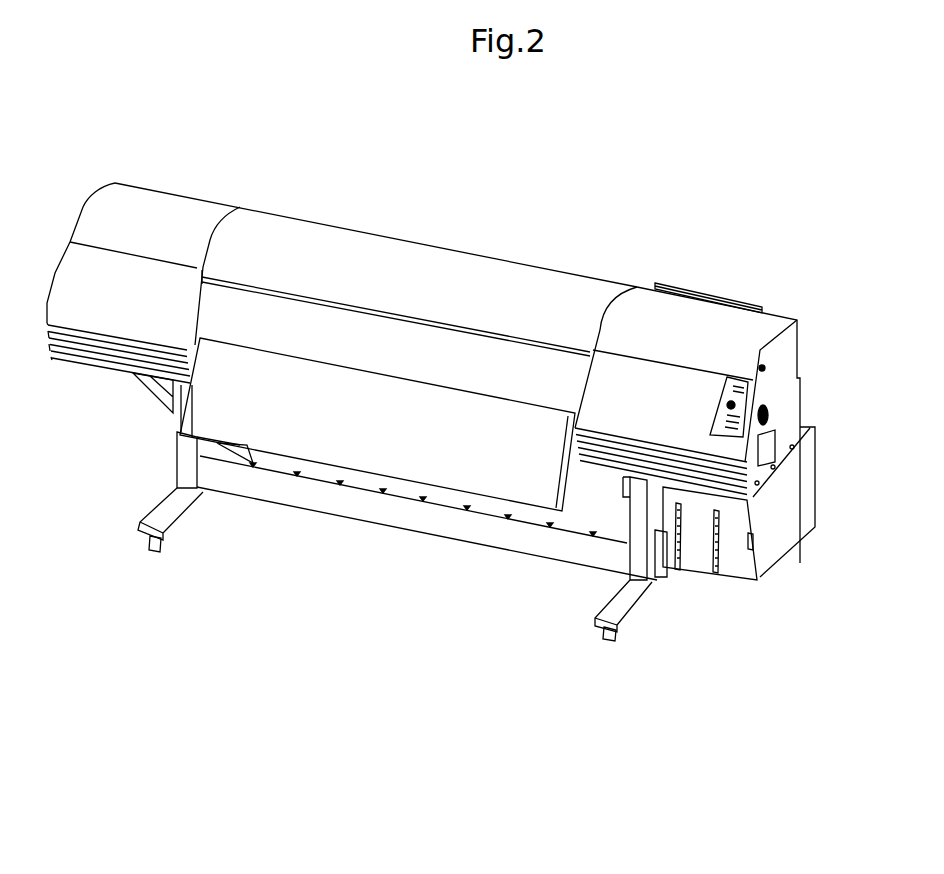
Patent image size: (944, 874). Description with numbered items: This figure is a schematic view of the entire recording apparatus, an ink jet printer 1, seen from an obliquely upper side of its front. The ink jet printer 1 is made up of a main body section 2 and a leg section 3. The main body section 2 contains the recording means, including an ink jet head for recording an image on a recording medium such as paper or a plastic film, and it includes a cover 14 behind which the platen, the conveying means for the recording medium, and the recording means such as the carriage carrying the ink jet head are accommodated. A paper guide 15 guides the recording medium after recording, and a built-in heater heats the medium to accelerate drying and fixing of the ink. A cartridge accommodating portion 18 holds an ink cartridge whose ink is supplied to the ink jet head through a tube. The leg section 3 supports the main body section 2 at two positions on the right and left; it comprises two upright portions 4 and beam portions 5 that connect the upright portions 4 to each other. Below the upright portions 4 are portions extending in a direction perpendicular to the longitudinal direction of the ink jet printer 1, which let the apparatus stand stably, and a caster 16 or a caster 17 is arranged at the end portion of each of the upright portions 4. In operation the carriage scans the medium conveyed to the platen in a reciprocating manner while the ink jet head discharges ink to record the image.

The ink jet printer 1 is at (528, 208).
The main body section 2 is at (717, 333).
The leg section 3 is at (560, 583).
The upright portion 4 is at (177, 458).
The beam portion 5 is at (513, 537).
The cover 14 is at (445, 362).
The paper guide 15 is at (320, 435).
The caster 16 is at (158, 548).
The caster 17 is at (612, 638).
The cartridge accommodating portion 18 is at (732, 535).